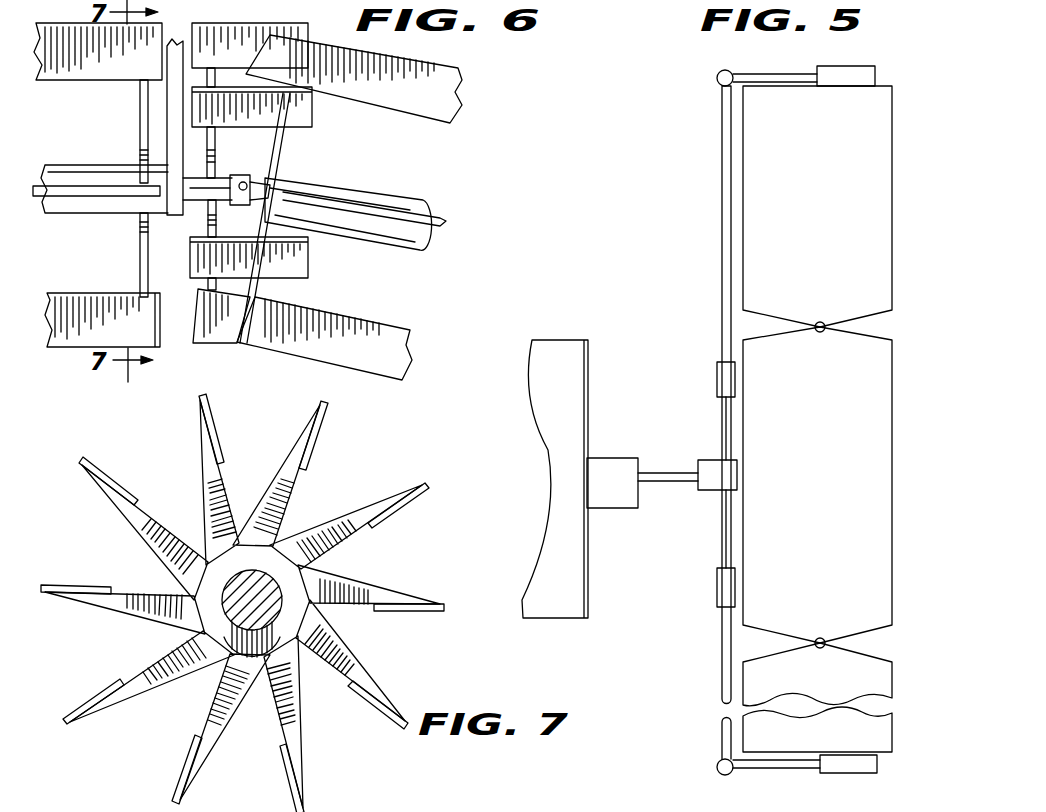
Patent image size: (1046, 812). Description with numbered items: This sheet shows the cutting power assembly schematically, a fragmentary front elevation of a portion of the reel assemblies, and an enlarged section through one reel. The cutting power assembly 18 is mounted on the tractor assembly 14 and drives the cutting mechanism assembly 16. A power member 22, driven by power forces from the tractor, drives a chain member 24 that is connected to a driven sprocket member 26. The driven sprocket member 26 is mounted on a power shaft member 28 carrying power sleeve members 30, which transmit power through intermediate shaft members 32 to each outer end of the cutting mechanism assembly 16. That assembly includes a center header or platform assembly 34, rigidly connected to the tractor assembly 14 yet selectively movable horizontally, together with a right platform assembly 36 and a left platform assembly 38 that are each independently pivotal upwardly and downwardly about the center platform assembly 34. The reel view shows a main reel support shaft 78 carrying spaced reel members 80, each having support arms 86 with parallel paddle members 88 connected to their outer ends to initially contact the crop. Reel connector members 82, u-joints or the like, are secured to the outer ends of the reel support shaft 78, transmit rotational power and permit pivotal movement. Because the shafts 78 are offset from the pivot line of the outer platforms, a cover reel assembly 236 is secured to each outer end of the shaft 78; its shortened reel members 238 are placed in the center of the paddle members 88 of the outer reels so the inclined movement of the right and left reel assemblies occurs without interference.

In FIG. 5, the tractor assembly 14 is at (558, 325).
In FIG. 5, the cutting mechanism assembly 16 is at (686, 606).
In FIG. 5, the cutting power assembly 18 is at (670, 514).
In FIG. 5, the power member 22 is at (610, 465).
In FIG. 5, the chain member 24 is at (652, 472).
In FIG. 5, the driven sprocket member 26 is at (708, 466).
In FIG. 5, the power shaft member 28 is at (722, 424).
In FIG. 5, the power sleeve member 30 is at (717, 380).
In FIG. 5, the intermediate shaft member 32 is at (722, 228).
In FIG. 5, the center header or platform assembly 34 is at (882, 430).
In FIG. 5, the right header or platform assembly 36 is at (892, 681).
In FIG. 5, the left header or platform assembly 38 is at (882, 186).
In FIG. 6, the main reel support shaft 78 is at (158, 207).
In FIG. 7, the main reel support shaft 78 is at (264, 598).
In FIG. 6, the reel member 80 is at (143, 112).
In FIG. 7, the reel member 80 is at (290, 495).
In FIG. 6, the reel connector member 82 is at (248, 177).
In FIG. 6, the support arm 86 is at (145, 268).
In FIG. 6, the paddle member 88 is at (76, 300).
In FIG. 7, the paddle member 88 is at (320, 425).
In FIG. 6, the cover reel assembly 236 is at (312, 105).
In FIG. 6, the shortened reel member 238 is at (305, 248).